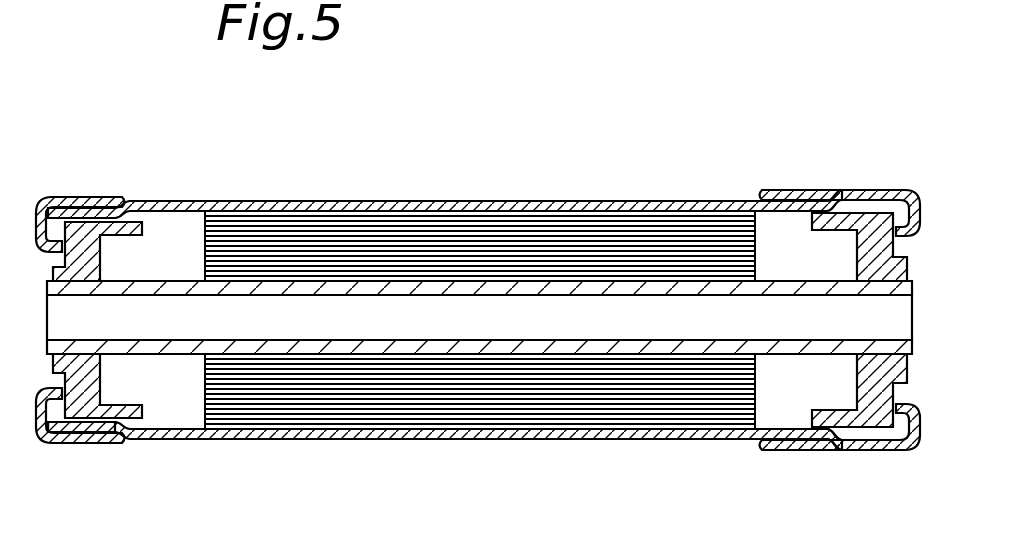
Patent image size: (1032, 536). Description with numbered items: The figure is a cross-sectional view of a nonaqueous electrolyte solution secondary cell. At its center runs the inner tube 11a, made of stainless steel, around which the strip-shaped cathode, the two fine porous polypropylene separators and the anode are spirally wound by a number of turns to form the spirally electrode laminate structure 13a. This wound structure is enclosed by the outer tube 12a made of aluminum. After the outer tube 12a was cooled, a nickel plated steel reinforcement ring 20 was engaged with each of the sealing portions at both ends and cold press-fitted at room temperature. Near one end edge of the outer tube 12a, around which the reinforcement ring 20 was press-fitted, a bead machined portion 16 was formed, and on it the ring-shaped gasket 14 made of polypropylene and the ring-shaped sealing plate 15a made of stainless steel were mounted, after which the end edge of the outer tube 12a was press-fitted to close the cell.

The reinforcement ring 20 is at (80, 196).
The inner tube 11a is at (170, 281).
The outer tube 12a is at (393, 202).
The spirally electrode laminate structure 13a is at (578, 222).
The ring-shaped gasket 14 is at (77, 440).
The ring-shaped sealing plate 15a is at (93, 440).
The bead machined portion 16 is at (832, 449).